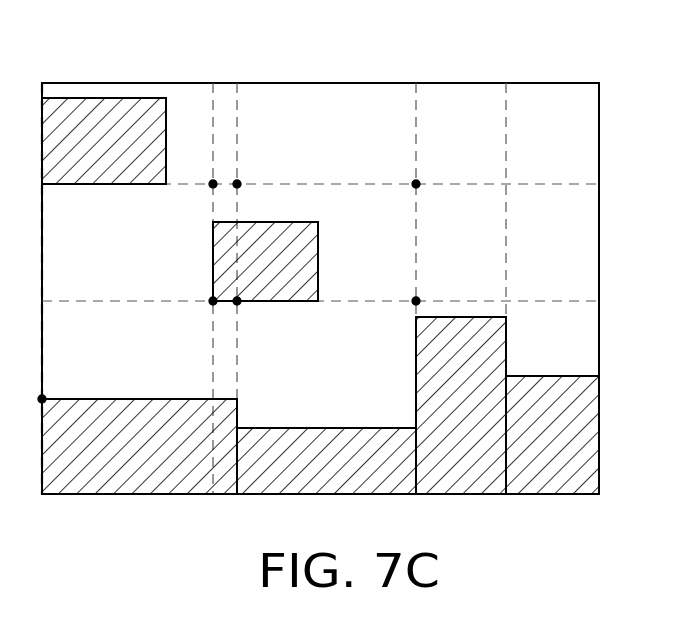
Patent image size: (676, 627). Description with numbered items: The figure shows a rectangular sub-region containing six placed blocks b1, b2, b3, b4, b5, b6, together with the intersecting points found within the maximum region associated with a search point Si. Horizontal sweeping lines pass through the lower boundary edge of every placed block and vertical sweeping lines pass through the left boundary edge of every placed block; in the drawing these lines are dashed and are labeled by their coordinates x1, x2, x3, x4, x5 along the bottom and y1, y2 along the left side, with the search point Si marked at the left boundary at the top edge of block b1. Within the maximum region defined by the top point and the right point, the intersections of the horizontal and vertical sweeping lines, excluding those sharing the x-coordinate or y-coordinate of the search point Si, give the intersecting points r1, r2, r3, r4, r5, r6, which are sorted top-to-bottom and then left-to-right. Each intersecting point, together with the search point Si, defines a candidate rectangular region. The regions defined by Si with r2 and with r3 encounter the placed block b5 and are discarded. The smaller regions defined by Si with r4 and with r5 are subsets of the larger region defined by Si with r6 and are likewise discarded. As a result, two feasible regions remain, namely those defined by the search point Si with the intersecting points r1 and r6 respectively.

The placed block b1 is at (139, 446).
The placed block b2 is at (326, 462).
The placed block b3 is at (461, 405).
The placed block b4 is at (104, 141).
The placed block b5 is at (265, 261).
The placed block b6 is at (552, 435).
The intersecting point r1 is at (205, 170).
The intersecting point r2 is at (249, 170).
The intersecting point r3 is at (427, 170).
The intersecting point r4 is at (205, 315).
The intersecting point r5 is at (250, 315).
The intersecting point r6 is at (427, 287).
The x-coordinate x1 is at (31, 304).
The x-coordinate x2 is at (216, 304).
The x-coordinate x3 is at (246, 304).
The x-coordinate x4 is at (422, 304).
The x-coordinate x5 is at (516, 304).
The y-coordinate y1 is at (309, 298).
The y-coordinate y2 is at (309, 181).
The search point Si is at (33, 386).